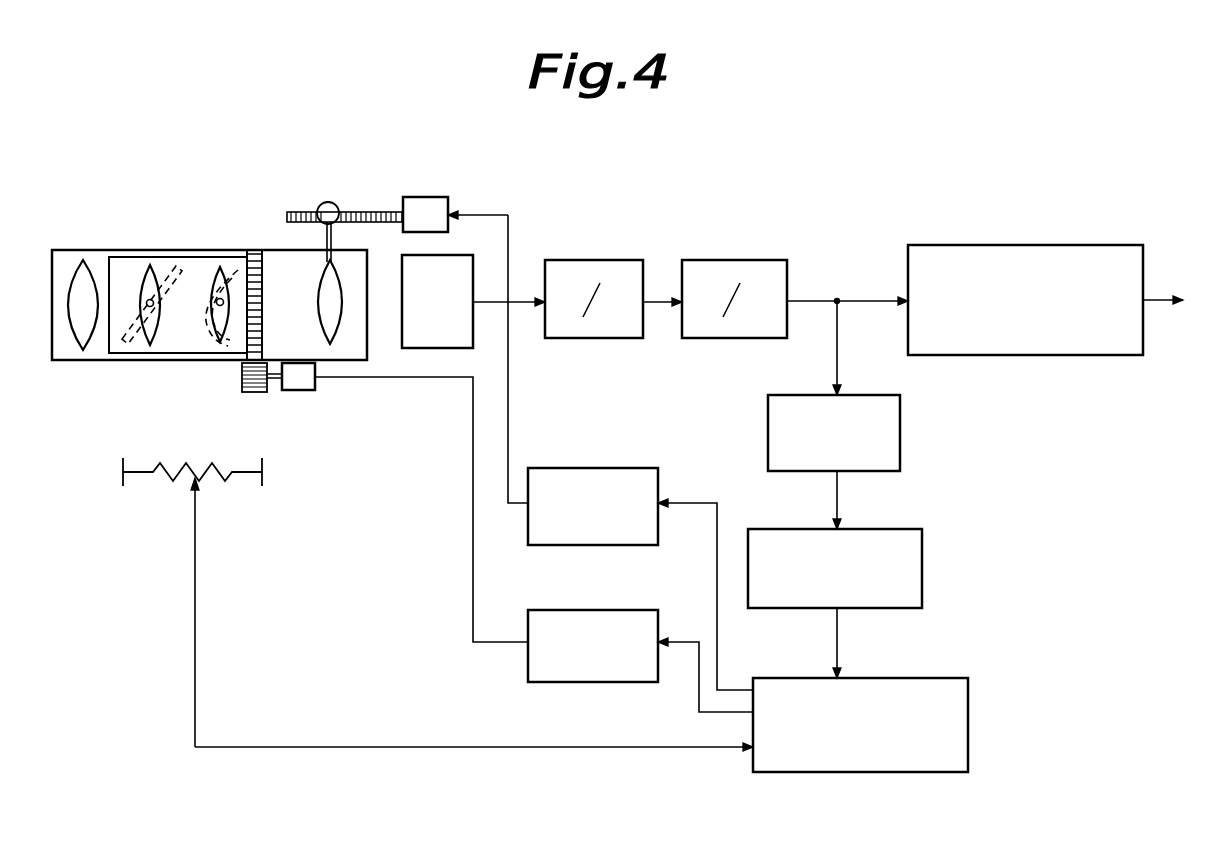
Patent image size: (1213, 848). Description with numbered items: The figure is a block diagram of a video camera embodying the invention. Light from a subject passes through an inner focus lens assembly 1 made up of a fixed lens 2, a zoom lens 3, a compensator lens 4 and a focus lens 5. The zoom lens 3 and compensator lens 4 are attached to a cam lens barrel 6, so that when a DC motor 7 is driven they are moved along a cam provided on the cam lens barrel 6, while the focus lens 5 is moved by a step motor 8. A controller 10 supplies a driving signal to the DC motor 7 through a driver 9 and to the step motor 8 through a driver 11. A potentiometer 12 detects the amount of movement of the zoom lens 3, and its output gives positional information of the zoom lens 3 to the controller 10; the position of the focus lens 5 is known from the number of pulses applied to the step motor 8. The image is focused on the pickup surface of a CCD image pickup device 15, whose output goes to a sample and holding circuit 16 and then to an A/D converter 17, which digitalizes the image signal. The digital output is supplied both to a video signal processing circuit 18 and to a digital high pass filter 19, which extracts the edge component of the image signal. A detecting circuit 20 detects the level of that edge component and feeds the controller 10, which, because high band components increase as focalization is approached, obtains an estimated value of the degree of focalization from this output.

The inner focus lens assembly 1 is at (165, 226).
The fixed lens 2 is at (83, 262).
The zoom lens 3 is at (145, 273).
The compensator lens 4 is at (213, 273).
The focus lens 5 is at (320, 283).
The cam lens barrel 6 is at (175, 340).
The DC motor 7 is at (307, 393).
The step motor 8 is at (432, 197).
The driver 9 is at (630, 610).
The controller 10 is at (927, 677).
The driver 11 is at (610, 468).
The potentiometer 12 is at (220, 477).
The CCD image pickup device 15 is at (472, 255).
The sample and holding circuit 16 is at (605, 258).
The A/D converter 17 is at (737, 258).
The video signal processing circuit 18 is at (975, 245).
The digital high pass filter 19 is at (782, 395).
The detecting circuit 20 is at (908, 528).